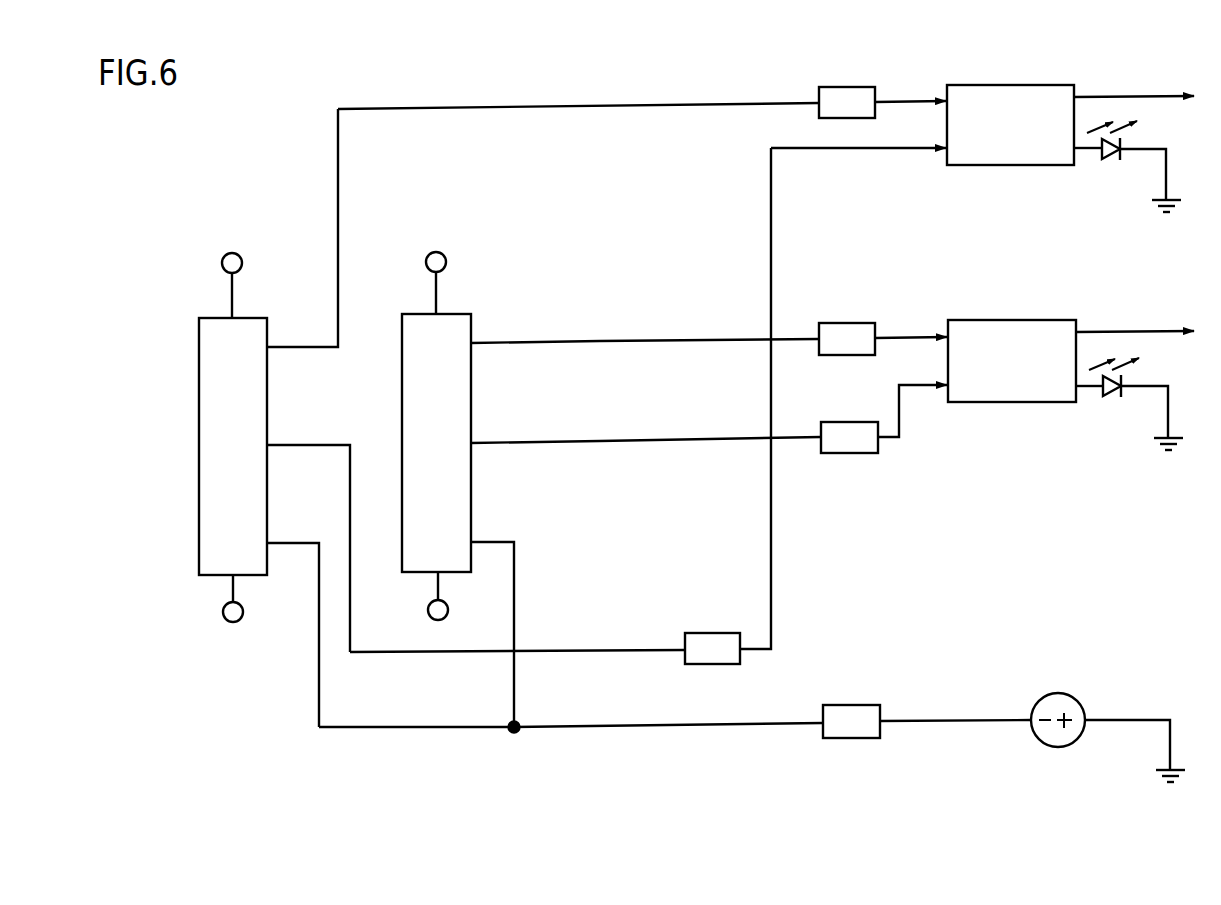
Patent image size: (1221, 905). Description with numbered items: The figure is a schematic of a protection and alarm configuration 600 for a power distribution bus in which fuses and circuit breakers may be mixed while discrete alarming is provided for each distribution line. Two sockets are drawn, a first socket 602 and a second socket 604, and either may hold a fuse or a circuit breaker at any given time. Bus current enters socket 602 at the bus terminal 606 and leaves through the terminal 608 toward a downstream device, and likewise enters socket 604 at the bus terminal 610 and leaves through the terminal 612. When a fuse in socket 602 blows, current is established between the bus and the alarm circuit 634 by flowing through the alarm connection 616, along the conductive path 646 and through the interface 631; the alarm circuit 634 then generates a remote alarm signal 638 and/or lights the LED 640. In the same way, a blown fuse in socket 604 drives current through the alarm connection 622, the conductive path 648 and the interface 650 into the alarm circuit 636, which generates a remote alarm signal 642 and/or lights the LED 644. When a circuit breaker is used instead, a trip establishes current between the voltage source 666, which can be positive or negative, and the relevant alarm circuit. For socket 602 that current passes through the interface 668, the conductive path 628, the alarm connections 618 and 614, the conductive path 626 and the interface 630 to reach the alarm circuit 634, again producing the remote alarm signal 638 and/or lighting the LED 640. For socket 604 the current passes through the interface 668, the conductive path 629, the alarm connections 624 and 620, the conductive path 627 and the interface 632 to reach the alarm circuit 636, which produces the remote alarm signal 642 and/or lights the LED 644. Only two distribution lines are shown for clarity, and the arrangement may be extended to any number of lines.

The protection and alarm configuration 600 is at (899, 789).
The socket 602 is at (198, 508).
The socket 604 is at (402, 371).
The bus terminal 606 is at (236, 251).
The terminal 608 is at (242, 615).
The bus terminal 610 is at (445, 258).
The terminal 612 is at (447, 613).
The alarm connection 614 is at (277, 347).
The alarm connection 616 is at (288, 444).
The alarm connection 618 is at (288, 541).
The alarm connection 620 is at (482, 342).
The alarm connection 622 is at (492, 442).
The alarm connection 624 is at (493, 539).
The conductive path 626 is at (603, 104).
The conductive path 627 is at (625, 339).
The conductive path 628 is at (439, 724).
The conductive path 629 is at (517, 686).
The interface 630 is at (847, 86).
The interface 631 is at (715, 631).
The interface 632 is at (848, 321).
The alarm circuit 634 is at (1027, 83).
The alarm circuit 636 is at (1030, 318).
The remote alarm signal 638 is at (1115, 94).
The LED 640 is at (1113, 165).
The remote alarm signal 642 is at (1117, 330).
The LED 644 is at (1115, 402).
The conductive path 646 is at (577, 651).
The conductive path 648 is at (650, 439).
The interface 650 is at (850, 419).
The voltage source 666 is at (1044, 746).
The interface 668 is at (852, 704).